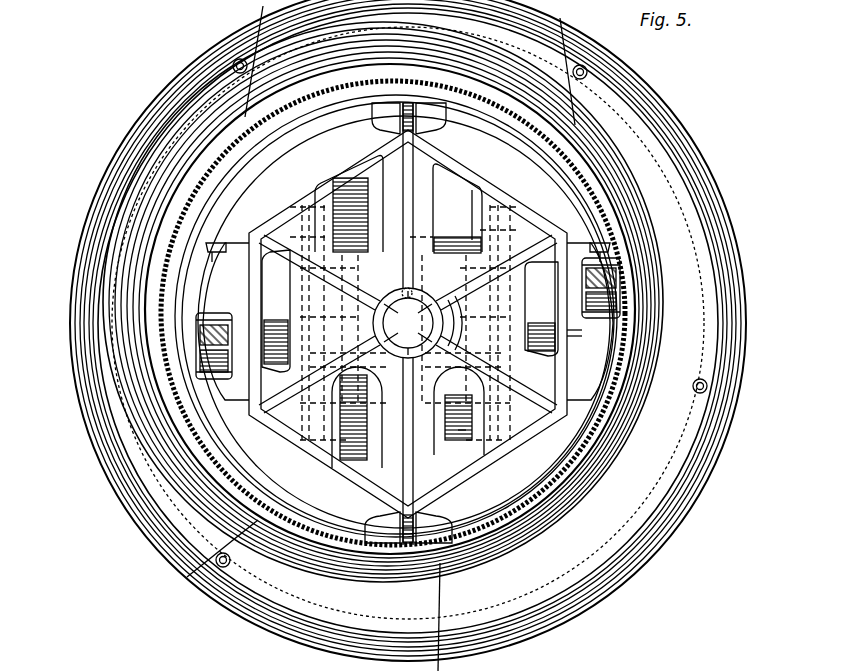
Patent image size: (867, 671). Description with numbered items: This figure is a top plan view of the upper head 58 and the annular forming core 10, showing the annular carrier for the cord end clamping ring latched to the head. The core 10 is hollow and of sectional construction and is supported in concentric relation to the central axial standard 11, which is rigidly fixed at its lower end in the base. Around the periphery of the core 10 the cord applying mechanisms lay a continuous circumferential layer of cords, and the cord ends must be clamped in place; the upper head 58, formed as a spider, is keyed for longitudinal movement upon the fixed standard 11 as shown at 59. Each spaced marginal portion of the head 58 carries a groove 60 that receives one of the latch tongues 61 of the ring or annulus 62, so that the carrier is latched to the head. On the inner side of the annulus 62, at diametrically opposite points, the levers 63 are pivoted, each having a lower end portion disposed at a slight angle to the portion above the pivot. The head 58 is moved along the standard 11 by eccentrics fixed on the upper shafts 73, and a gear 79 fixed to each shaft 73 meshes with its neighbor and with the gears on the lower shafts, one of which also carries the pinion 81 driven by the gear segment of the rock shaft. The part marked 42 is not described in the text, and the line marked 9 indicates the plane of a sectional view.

The annular forming core 10 is at (728, 312).
The upper head 58 is at (410, 193).
The central axial standard 11 is at (420, 308).
The key 59 is at (406, 290).
The gear 79 is at (372, 203).
The groove 60 is at (233, 253).
The latch tongues 61 is at (212, 257).
The ring or annulus 62 is at (170, 320).
The levers 63 is at (617, 292).
The spring window 42 is at (410, 312).
The upper shafts 73 is at (643, 330).
The pinion 81 is at (460, 431).
The section line 9- 9 is at (73, 490).